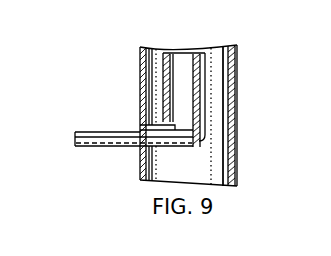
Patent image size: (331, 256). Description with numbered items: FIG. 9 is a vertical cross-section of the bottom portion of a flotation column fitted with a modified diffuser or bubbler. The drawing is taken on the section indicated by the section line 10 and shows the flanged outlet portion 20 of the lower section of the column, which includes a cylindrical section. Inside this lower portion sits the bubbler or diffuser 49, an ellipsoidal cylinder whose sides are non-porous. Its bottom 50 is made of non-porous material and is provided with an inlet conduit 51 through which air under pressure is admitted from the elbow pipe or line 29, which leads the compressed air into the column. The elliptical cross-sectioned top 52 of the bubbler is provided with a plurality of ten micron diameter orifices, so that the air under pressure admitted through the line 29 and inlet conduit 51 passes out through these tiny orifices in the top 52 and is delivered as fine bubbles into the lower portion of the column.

The section line 10 is at (123, 53).
The flanged outlet portion 20 is at (237, 97).
The elbow pipe 29 is at (87, 145).
The bubbler or diffuser 49 is at (210, 63).
The bottom 50 is at (226, 135).
The inlet conduit 51 is at (198, 142).
The elliptical cross-sectioned top 52 is at (188, 62).